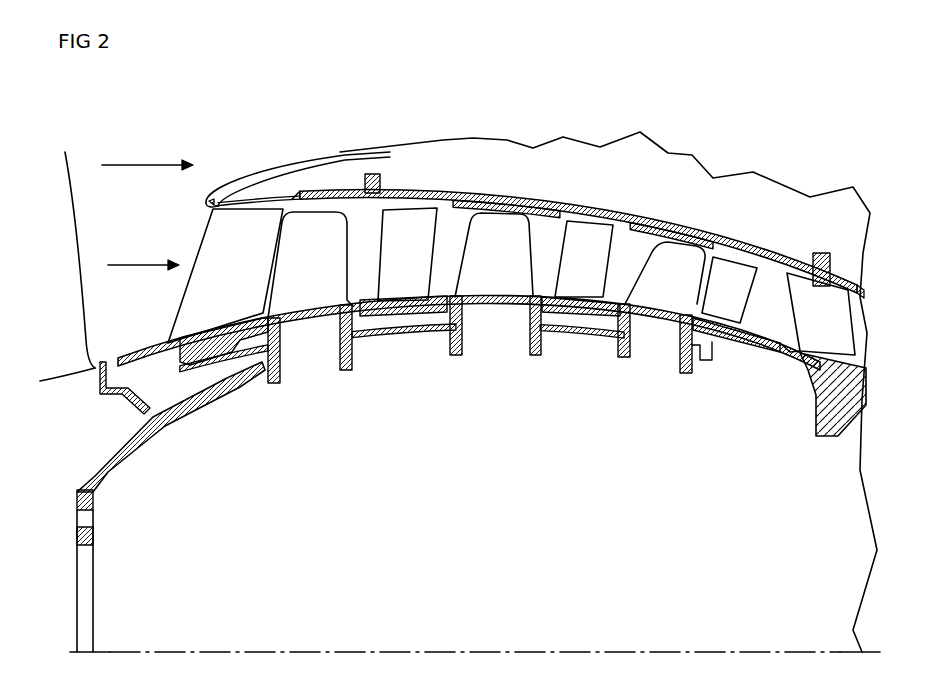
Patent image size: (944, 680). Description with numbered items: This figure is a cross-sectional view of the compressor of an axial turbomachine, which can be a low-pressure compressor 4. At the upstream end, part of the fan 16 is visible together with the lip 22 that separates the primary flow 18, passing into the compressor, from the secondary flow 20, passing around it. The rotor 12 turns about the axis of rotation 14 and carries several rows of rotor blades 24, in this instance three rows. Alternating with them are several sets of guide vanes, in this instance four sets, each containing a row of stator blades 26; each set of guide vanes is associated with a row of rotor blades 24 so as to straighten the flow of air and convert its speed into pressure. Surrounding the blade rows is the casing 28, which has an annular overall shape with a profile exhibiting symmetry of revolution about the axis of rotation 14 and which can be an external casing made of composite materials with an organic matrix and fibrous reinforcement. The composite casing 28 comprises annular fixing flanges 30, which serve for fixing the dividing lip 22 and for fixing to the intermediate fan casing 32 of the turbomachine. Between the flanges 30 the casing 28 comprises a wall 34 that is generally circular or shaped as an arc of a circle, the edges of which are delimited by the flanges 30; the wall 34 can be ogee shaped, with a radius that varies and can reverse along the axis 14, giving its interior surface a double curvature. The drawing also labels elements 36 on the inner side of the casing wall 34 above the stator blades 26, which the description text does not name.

The low-pressure compressor 4 is at (608, 349).
The rotor 12 is at (95, 503).
The axis of rotation 14 is at (563, 650).
The fan 16 is at (49, 276).
The primary flow 18 is at (143, 252).
The secondary flow 20 is at (147, 152).
The lip 22 is at (205, 206).
The rotor blades 24 is at (561, 283).
The stator blades 26 is at (462, 275).
The casing 28 is at (643, 170).
The fixing flanges 30 is at (376, 175).
The intermediate fan casing 32 is at (813, 412).
The wall 34 is at (575, 205).
The heat shield segments 36 is at (499, 203).